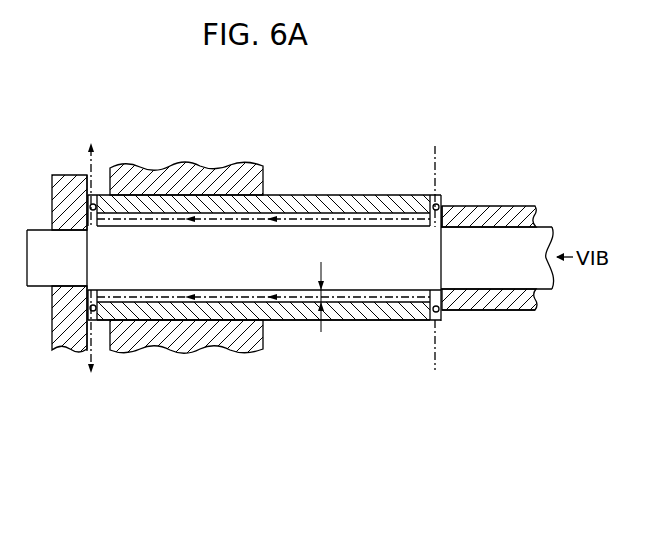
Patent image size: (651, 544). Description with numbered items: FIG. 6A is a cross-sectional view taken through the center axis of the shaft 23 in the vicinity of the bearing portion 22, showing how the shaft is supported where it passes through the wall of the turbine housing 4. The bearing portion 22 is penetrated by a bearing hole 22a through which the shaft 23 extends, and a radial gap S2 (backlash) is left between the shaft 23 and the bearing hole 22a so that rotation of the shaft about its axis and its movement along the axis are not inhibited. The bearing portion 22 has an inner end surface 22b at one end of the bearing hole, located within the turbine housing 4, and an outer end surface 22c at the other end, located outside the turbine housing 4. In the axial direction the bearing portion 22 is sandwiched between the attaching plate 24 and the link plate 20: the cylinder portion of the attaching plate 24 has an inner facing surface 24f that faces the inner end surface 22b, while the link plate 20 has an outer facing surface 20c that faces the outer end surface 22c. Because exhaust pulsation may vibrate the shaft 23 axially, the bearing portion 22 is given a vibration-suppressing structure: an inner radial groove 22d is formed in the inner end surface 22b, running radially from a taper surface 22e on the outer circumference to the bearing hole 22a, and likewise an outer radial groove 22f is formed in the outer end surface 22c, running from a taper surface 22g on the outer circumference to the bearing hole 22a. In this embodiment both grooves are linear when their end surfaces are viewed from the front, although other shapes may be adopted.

The link plate 20 is at (87, 173).
The outer facing surface 20c is at (78, 190).
The bearing portion 22 is at (299, 162).
The bearing hole 22a is at (305, 298).
The inner end surface 22b is at (438, 311).
The outer end surface 22c is at (82, 322).
The inner radial groove 22d is at (423, 318).
The taper surface 22e is at (430, 195).
The outer radial groove 22f is at (125, 348).
The taper surface 22g is at (98, 195).
The turbine housing 4 is at (222, 352).
The attaching plate 24 is at (522, 205).
The inner facing surface 24f is at (442, 207).
The shaft 23 is at (527, 310).
The gap S2 is at (336, 302).